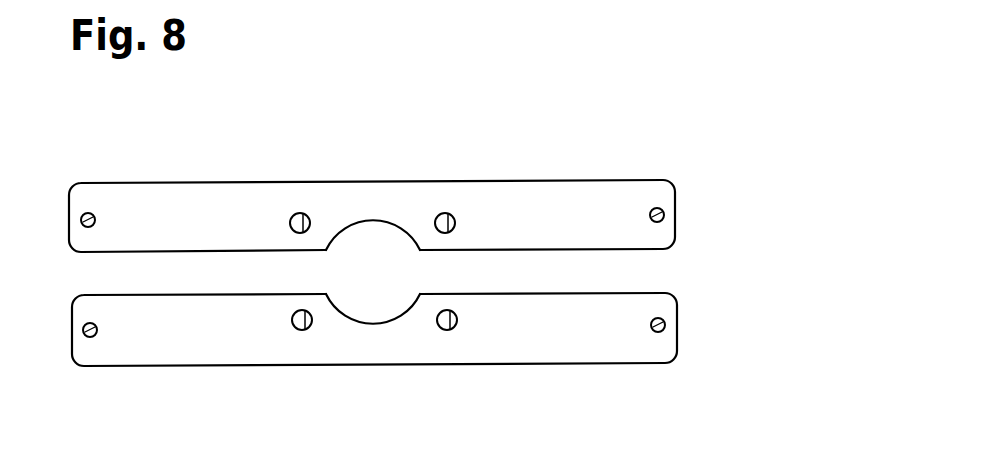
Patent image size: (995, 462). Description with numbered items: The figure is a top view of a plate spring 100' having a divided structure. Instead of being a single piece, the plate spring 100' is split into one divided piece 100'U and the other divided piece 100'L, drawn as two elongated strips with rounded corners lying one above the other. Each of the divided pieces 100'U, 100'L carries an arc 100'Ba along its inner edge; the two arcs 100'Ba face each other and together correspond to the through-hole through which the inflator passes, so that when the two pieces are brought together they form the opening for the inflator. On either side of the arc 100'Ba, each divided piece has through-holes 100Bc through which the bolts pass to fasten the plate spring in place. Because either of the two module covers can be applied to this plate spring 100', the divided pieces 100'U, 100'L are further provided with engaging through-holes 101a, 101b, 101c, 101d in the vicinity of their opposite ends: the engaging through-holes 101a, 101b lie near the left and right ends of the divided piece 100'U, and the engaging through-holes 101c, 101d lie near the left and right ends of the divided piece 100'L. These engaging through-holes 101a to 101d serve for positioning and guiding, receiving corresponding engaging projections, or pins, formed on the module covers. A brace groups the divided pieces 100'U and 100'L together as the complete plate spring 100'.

The plate spring 100' is at (464, 267).
The divided piece 100'U is at (413, 180).
The divided piece 100'L is at (418, 362).
The arc 100'Ba is at (372, 272).
The through-holes 100Bc is at (437, 214).
The engaging through-hole 101a is at (96, 219).
The engaging through-hole 101b is at (650, 216).
The engaging through-hole 101c is at (97, 334).
The engaging through-hole 101d is at (650, 323).